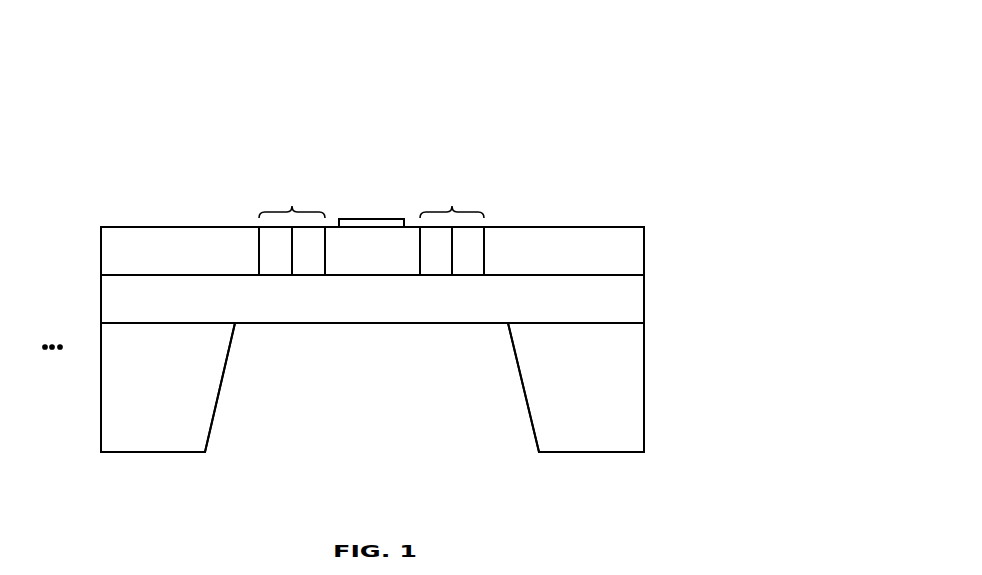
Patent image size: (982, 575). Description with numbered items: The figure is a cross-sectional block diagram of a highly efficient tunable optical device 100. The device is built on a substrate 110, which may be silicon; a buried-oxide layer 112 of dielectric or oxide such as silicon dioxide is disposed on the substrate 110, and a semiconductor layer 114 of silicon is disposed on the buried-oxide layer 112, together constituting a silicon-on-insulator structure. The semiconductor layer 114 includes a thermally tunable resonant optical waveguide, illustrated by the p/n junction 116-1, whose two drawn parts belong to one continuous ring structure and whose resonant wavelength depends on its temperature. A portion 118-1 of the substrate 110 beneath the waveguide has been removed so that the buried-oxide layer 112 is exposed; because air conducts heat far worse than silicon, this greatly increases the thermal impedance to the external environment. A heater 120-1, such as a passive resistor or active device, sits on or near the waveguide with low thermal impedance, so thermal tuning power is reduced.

The tunable optical device 100 is at (645, 62).
The substrate 110 is at (172, 403).
The buried-oxide layer 112 is at (605, 297).
The semiconductor layer 114 is at (383, 240).
The p/n junction 116-1 is at (452, 207).
The portion 118-1 is at (380, 372).
The heater 120-1 is at (360, 223).